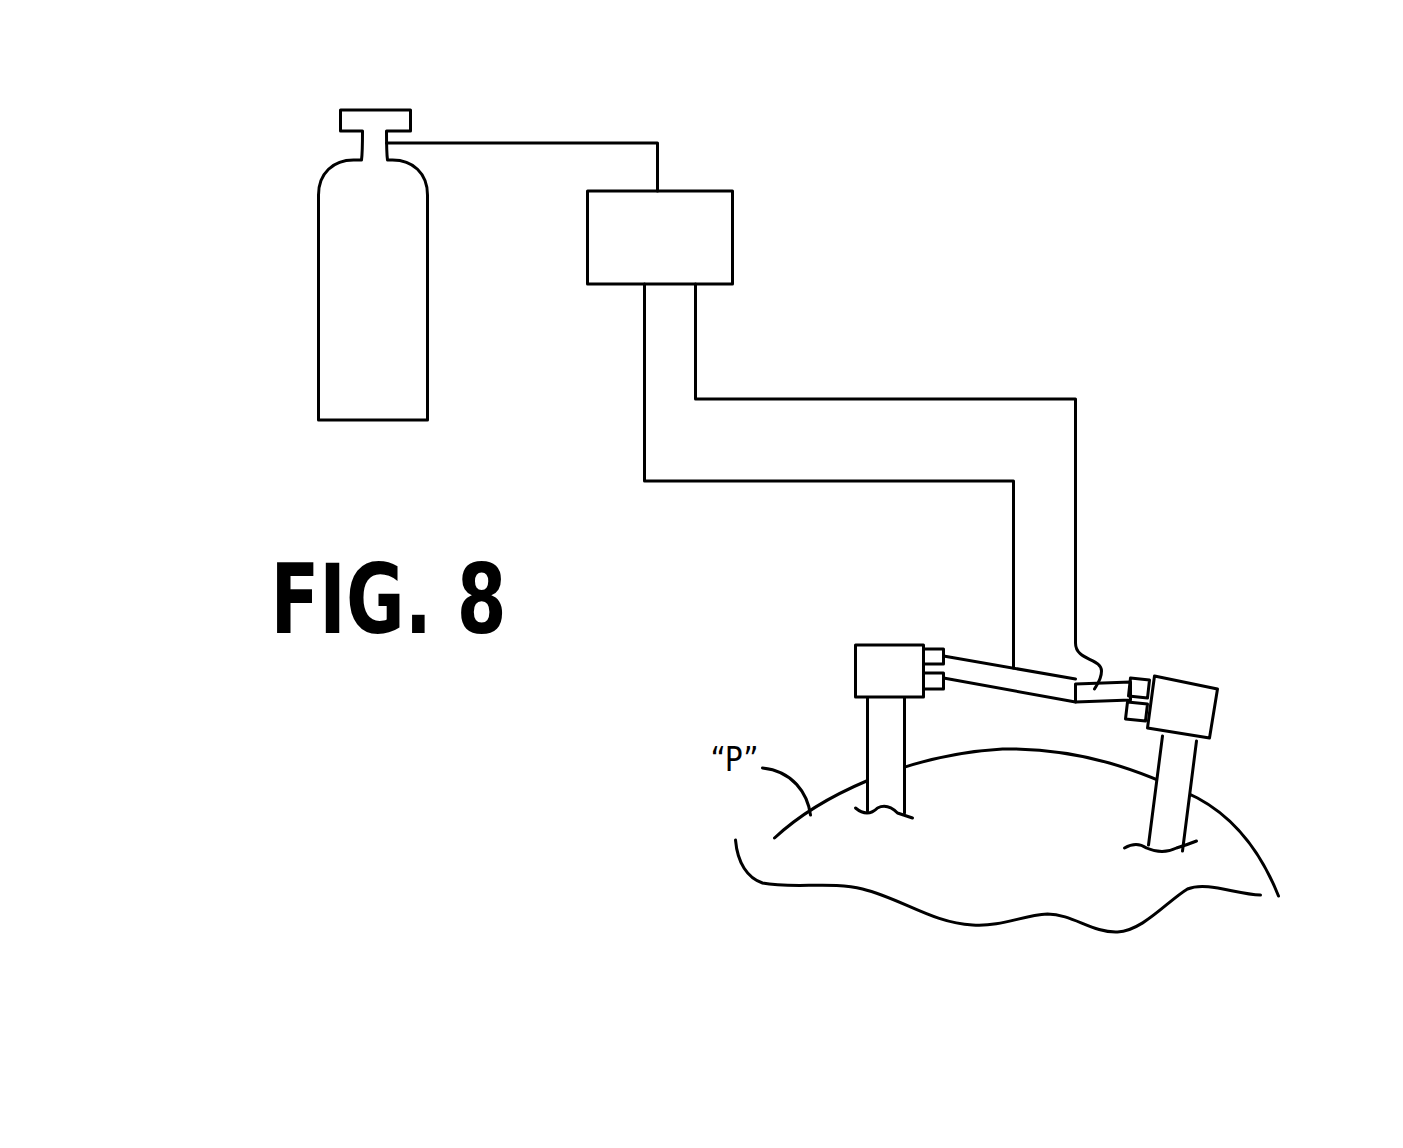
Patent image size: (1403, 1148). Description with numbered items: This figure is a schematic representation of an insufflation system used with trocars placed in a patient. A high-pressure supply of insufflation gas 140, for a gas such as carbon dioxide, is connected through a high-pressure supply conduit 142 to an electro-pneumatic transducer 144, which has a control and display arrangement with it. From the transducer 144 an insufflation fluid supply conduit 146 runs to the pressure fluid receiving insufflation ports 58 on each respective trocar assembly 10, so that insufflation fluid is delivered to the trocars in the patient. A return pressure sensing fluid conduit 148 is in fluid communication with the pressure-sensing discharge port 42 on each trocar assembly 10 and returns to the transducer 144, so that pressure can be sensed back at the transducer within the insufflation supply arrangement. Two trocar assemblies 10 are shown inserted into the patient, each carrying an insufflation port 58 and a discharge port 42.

The high-pressure supply of insufflation gas 140 is at (316, 249).
The high-pressure supply conduit 142 is at (540, 137).
The electro-pneumatic transducer 144 is at (710, 218).
The insufflation fluid supply conduit 146 is at (642, 451).
The return pressure sensing fluid conduit 148 is at (1075, 493).
The trocar assembly 10 is at (845, 655).
The pressure fluid receiving insufflation port 58 is at (933, 651).
The pressure-sensing discharge port 42 is at (933, 682).